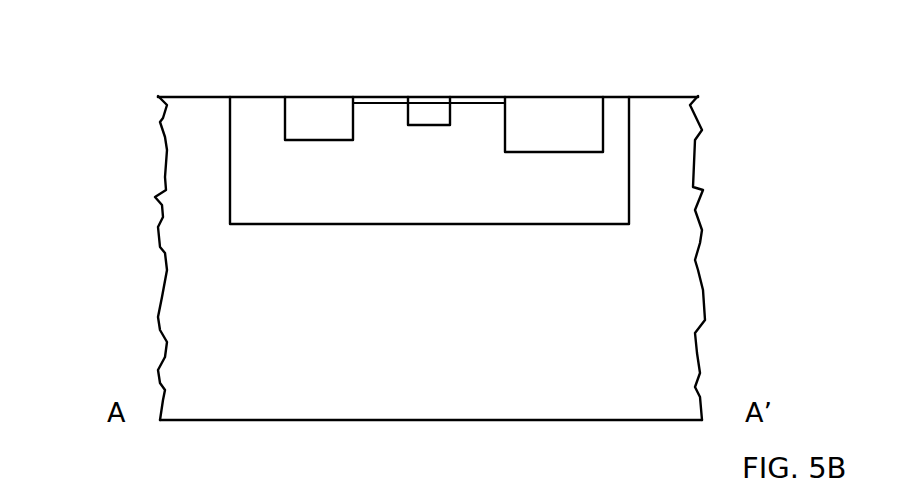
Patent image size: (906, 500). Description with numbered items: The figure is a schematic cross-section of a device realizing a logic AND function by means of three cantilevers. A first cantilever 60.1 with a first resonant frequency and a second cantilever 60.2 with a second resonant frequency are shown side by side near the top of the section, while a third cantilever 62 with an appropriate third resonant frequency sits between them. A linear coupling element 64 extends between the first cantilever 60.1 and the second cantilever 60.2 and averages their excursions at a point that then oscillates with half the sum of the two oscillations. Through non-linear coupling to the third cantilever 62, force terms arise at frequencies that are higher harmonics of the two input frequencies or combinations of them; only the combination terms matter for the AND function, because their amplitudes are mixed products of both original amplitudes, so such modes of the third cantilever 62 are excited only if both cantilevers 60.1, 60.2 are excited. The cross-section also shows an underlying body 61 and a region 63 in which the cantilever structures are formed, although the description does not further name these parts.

The semiconductor substrate 61 is at (678, 262).
The well region 63 is at (249, 204).
The first cantilever 60.1 is at (298, 133).
The second cantilever 60.2 is at (580, 123).
The third cantilever 62 is at (440, 113).
The linear coupling element 64 is at (380, 97).